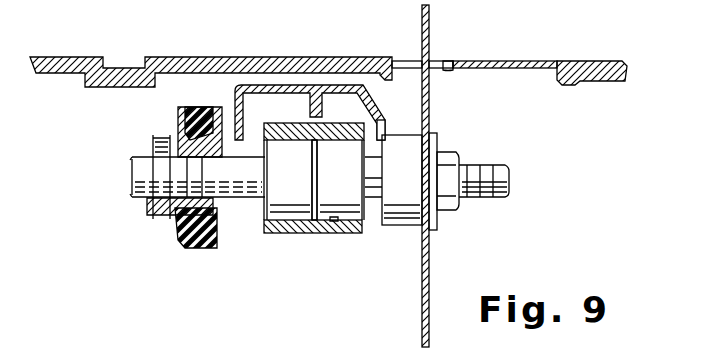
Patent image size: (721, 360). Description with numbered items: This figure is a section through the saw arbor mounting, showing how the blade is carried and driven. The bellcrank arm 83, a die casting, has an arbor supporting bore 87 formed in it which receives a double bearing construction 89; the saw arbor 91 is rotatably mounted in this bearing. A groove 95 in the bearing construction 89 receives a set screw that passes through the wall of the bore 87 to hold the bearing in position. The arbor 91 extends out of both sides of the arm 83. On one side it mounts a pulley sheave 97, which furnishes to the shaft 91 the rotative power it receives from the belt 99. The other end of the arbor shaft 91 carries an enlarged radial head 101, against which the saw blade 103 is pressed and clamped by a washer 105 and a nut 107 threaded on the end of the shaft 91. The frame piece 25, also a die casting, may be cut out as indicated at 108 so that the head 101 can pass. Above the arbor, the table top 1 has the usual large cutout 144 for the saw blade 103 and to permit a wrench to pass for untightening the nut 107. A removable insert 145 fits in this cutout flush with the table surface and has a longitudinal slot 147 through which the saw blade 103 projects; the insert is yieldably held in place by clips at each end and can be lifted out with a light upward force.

The table top 1 is at (205, 57).
The frame piece 25 is at (290, 85).
The cutout in frame piece 108 is at (413, 97).
The saw blade 103 is at (430, 104).
The washer 105 is at (438, 137).
The nut 107 is at (458, 157).
The longitudinal slot 147 is at (447, 61).
The removable insert 145 is at (498, 61).
The cutout 144 is at (560, 61).
The groove 95 is at (318, 170).
The double bearing construction 89 is at (281, 215).
The bellcrank arm 83 is at (312, 235).
The arbor supporting bore 87 is at (335, 222).
The enlarged radial head 101 is at (398, 224).
The saw arbor 91 is at (256, 200).
The pulley sheave 97 is at (185, 218).
The belt 99 is at (190, 250).